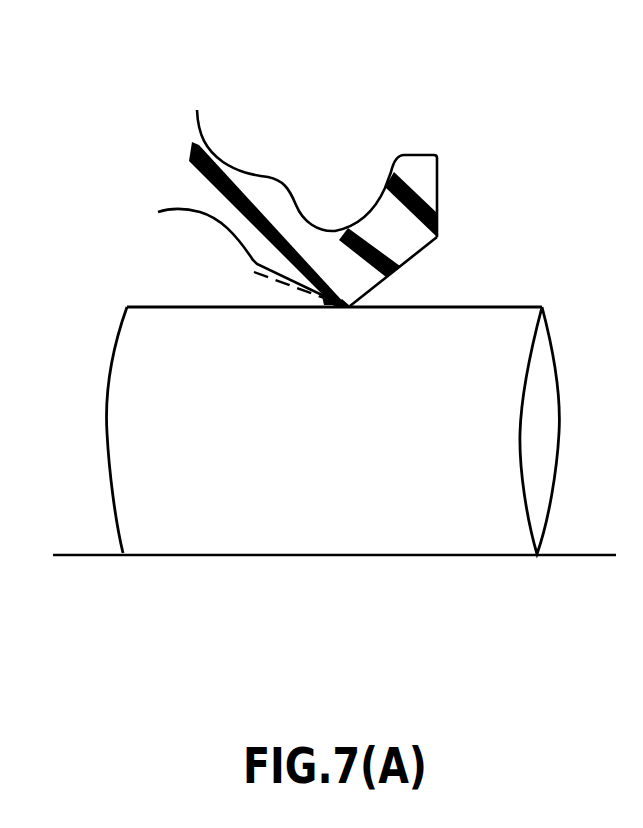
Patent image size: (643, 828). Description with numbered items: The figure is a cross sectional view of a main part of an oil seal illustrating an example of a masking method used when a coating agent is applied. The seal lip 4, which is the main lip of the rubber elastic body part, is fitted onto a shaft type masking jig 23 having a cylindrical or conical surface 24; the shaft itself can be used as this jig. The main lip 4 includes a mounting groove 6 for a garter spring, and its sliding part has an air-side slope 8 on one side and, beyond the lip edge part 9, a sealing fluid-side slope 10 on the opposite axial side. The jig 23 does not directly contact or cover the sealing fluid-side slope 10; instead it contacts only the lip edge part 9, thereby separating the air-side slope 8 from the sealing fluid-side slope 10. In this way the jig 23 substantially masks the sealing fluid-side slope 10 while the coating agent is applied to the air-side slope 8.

The main lip 4 is at (313, 243).
The mounting groove 6 is at (385, 187).
The air-side slope 8 is at (303, 285).
The lip edge part 9 is at (347, 307).
The sealing fluid-side slope 10 is at (405, 262).
The shaft type masking jig 23 is at (482, 533).
The cylindrical or conical surface 24 is at (495, 307).